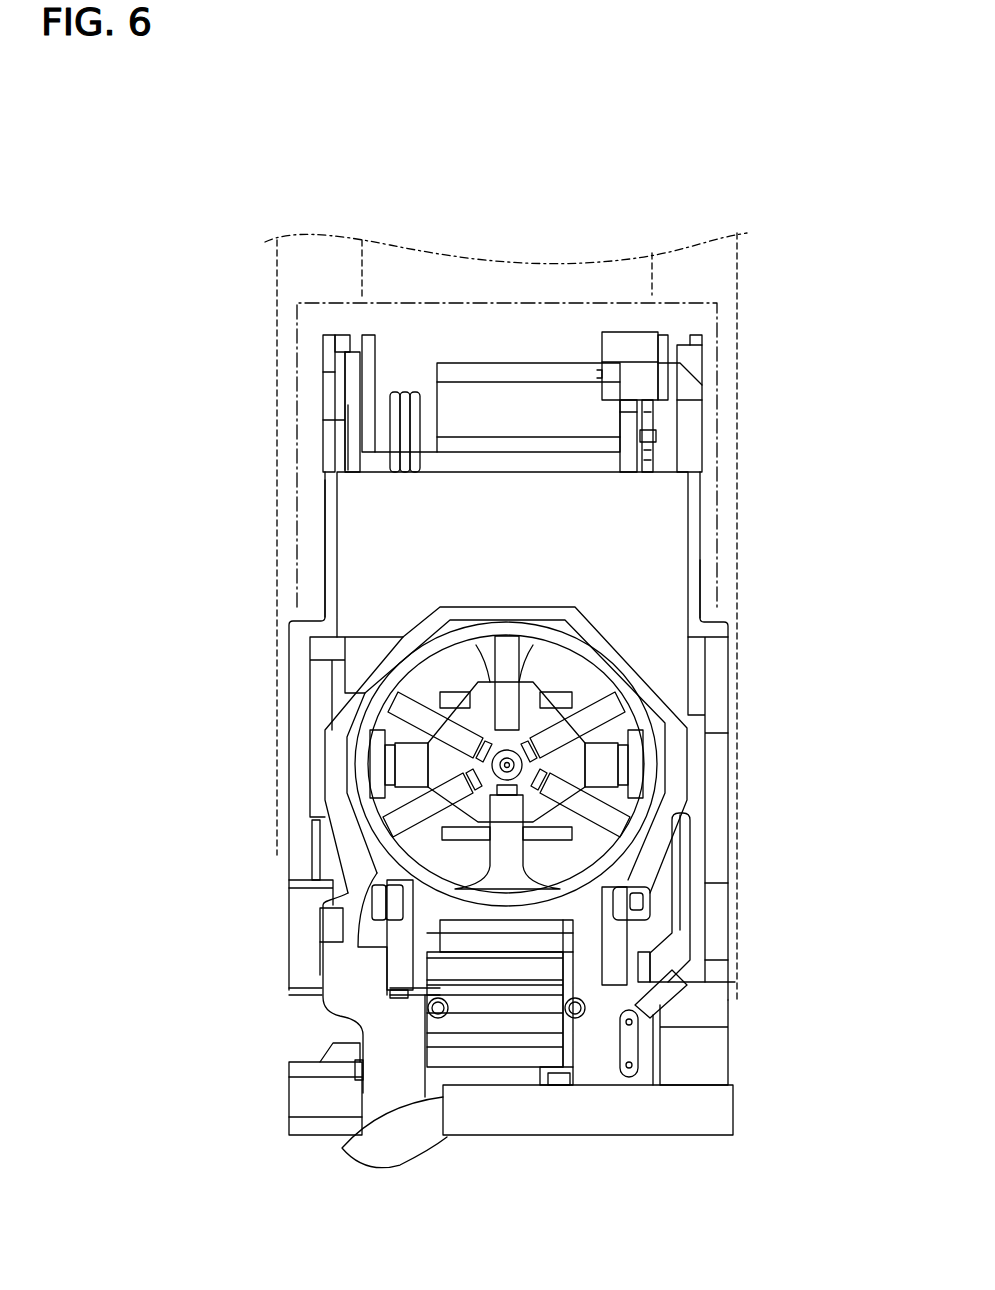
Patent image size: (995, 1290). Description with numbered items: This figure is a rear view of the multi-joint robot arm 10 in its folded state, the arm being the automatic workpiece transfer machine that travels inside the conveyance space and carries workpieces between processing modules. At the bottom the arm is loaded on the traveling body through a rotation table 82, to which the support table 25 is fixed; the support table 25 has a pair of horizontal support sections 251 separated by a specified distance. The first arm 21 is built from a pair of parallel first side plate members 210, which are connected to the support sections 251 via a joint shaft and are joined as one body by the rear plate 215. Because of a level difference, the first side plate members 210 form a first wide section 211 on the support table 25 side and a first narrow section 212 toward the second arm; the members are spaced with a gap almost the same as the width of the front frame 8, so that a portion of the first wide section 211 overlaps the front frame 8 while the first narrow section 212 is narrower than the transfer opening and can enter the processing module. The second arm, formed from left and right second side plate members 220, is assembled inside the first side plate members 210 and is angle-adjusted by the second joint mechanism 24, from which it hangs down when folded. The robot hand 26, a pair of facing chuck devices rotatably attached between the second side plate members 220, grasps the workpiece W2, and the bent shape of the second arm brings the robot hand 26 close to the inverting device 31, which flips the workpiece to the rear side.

The multi-joint robot arm 10 is at (482, 158).
The front frame 8 is at (317, 268).
The second joint mechanism 24 is at (587, 348).
The second side plate members 220 is at (358, 400).
The rear plate 215 is at (655, 520).
The first narrow section 212 is at (332, 573).
The first side plate members 210 is at (192, 552).
The first wide section 211 is at (300, 655).
The robot hand 26 is at (578, 690).
The workpiece W2 is at (347, 737).
The first arm 21 is at (732, 750).
The inverting device 31 is at (325, 792).
The support sections 251 is at (335, 958).
The support table 25 is at (397, 1042).
The rotation table 82 is at (700, 1113).